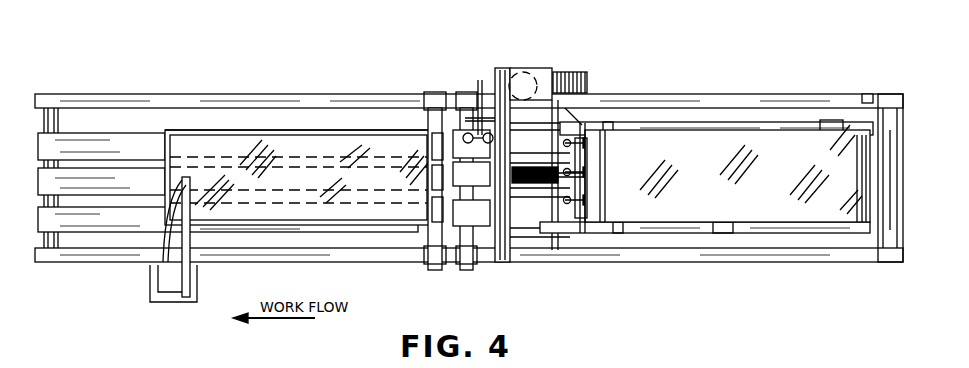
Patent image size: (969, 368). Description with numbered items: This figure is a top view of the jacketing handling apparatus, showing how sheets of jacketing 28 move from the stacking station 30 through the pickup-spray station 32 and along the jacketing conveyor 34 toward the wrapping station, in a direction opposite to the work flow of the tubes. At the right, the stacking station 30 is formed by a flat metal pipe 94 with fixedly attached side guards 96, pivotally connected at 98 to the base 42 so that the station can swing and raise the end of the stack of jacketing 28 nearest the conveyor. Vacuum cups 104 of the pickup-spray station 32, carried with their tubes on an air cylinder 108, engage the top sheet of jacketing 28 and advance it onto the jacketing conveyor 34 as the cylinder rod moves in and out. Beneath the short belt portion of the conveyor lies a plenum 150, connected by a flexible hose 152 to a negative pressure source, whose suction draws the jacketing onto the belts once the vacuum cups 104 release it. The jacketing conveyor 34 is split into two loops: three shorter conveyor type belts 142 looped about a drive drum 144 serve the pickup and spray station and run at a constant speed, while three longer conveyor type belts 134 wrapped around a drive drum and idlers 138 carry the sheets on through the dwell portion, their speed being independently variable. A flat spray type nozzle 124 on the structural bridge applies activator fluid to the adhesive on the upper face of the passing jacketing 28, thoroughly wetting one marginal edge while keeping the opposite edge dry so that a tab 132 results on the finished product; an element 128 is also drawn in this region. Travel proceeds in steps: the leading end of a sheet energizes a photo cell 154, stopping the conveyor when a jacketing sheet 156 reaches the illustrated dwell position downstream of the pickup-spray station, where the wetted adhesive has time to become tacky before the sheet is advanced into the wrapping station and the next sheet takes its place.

The jacketing 28 is at (784, 163).
The stacking station 30 is at (748, 55).
The pickup-spray station 32 is at (544, 57).
The jacketing conveyor 34 is at (266, 57).
The base 42 is at (822, 262).
The flat metal pipe 94 is at (808, 125).
The side guards 96 is at (707, 123).
The pivotal connection 98 is at (872, 95).
The vacuum cups 104 is at (617, 127).
The air cylinder 108 is at (535, 187).
The flat spray type nozzle 124 is at (480, 80).
The link 128 is at (470, 120).
The tab 132 is at (283, 218).
The conveyor type belts 134 is at (130, 220).
The idler 138 is at (440, 253).
The shorter conveyor type belts 142 is at (600, 200).
The drive drum 144 is at (470, 228).
The plenum 150 is at (547, 72).
The flexible hose 152 is at (580, 127).
The photo cell 154 is at (160, 278).
The jacketing sheet 156 is at (360, 137).